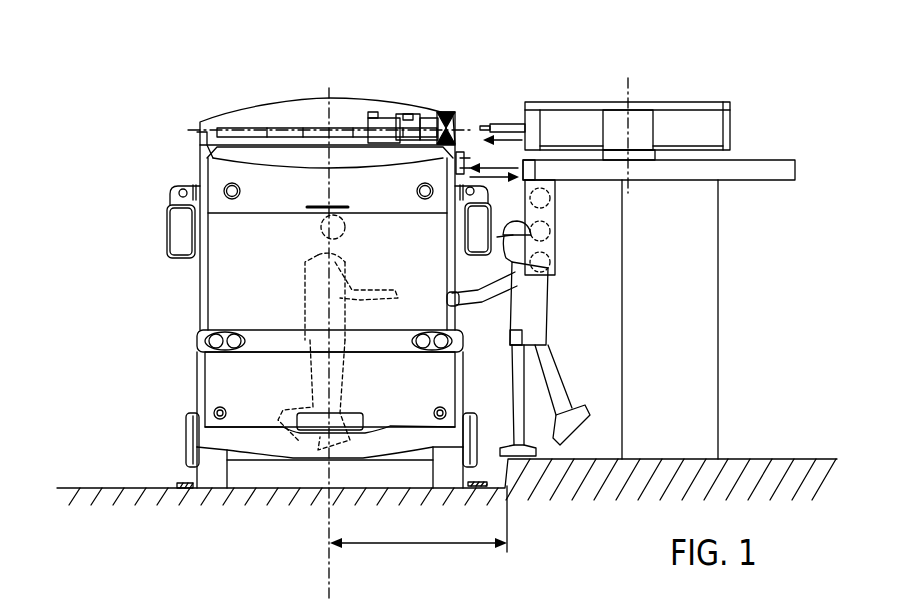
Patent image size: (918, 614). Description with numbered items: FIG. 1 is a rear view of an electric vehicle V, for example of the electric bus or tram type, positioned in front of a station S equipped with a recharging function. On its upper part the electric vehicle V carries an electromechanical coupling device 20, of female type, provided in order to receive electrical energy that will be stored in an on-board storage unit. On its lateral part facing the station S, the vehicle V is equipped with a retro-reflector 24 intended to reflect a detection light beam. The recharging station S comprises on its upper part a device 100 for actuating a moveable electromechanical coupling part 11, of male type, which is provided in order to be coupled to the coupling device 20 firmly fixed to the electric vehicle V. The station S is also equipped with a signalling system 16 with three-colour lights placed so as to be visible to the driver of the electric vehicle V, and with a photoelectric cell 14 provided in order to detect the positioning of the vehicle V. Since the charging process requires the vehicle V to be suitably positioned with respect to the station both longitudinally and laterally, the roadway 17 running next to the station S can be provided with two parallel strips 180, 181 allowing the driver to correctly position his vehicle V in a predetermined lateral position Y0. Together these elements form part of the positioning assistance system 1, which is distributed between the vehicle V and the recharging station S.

The positioning assistance system 1 is at (486, 90).
The moveable electromechanical coupling part 11 is at (505, 122).
The photoelectric cell 14 is at (540, 173).
The signalling system 16 is at (556, 250).
The roadway 17 is at (275, 490).
The electromechanical coupling device 20 is at (392, 118).
The retro-reflector 24 is at (461, 152).
The device for actuating the moveable electromechanical coupling part 100 is at (703, 100).
The parallel strip 180 is at (182, 482).
The parallel strip 181 is at (483, 484).
The station S is at (787, 150).
The electric vehicle V is at (192, 324).
The predetermined lateral position Y0 is at (418, 519).